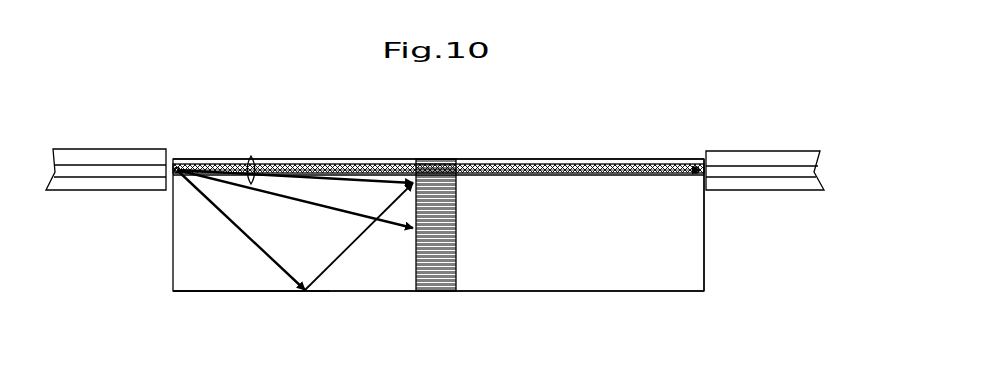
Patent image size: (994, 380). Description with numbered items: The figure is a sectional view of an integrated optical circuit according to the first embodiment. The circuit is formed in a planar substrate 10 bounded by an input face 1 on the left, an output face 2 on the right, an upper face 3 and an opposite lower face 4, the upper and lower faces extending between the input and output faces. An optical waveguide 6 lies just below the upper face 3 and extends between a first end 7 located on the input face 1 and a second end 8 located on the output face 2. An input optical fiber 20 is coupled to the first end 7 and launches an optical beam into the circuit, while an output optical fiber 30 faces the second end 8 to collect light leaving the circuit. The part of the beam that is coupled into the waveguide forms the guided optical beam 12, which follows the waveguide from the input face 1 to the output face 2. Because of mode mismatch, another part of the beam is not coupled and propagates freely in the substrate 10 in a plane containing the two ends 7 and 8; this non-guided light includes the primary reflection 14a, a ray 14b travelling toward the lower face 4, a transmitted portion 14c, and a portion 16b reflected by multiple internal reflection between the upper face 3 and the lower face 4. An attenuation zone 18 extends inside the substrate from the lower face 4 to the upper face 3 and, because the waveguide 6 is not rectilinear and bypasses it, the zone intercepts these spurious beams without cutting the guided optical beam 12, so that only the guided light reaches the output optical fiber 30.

The input face 1 is at (173, 251).
The output face 2 is at (706, 236).
The upper face 3 is at (516, 159).
The lower face 4 is at (254, 292).
The optical waveguide 6 is at (252, 156).
The first end 7 is at (180, 164).
The second end 8 is at (697, 164).
The substrate 10 is at (661, 274).
The guided optical beam 12 is at (368, 170).
The primary reflection 14a is at (236, 200).
The non-guided optical beam 14b is at (240, 236).
The transmitted non-guided beam 14c is at (284, 200).
The reflected beam 16b is at (340, 268).
The attenuation zone 18 is at (436, 292).
The input optical fiber 20 is at (90, 149).
The output optical fiber 30 is at (758, 151).